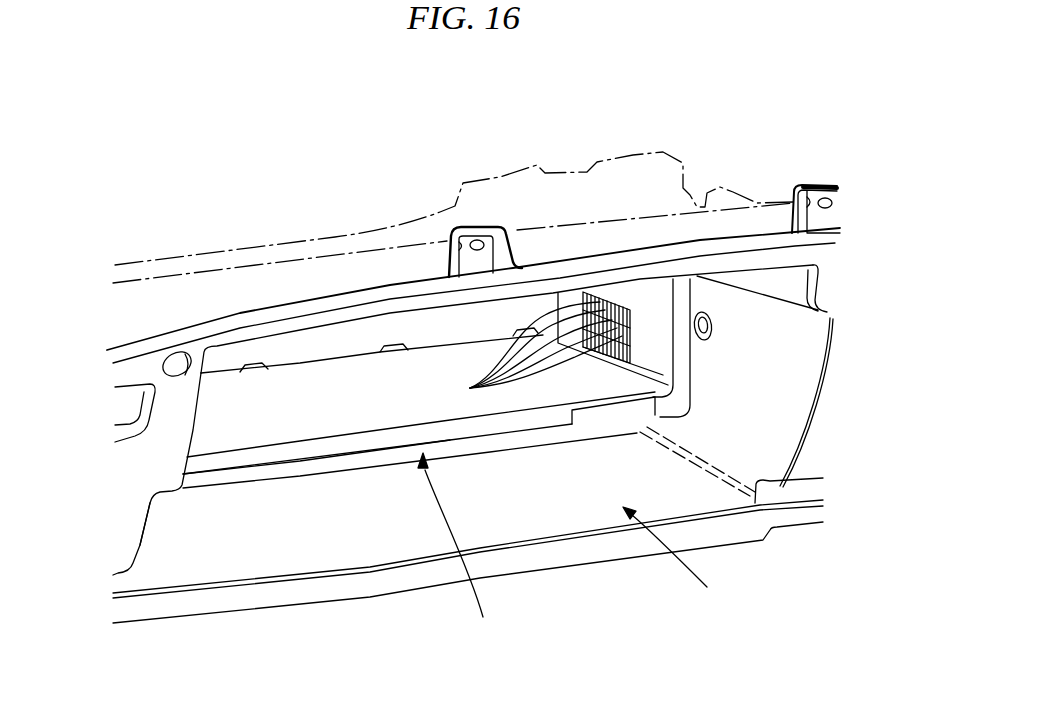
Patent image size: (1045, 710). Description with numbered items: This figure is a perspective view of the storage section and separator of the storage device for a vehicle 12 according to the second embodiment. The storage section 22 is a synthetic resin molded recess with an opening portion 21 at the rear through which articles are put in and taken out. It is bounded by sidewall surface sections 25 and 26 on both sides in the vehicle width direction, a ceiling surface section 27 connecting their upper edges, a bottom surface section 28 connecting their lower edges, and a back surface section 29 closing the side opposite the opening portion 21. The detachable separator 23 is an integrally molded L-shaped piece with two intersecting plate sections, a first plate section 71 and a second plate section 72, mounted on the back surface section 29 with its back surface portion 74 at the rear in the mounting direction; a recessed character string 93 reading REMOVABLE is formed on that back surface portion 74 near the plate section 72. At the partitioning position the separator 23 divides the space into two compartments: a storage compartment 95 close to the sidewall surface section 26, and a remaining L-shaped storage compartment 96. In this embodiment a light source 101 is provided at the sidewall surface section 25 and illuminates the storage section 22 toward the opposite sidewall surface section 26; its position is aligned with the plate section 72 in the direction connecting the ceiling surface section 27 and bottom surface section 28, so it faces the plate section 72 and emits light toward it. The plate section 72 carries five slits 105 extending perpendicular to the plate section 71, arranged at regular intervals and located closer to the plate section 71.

The storage device for a vehicle 12 is at (732, 168).
The ceiling surface section 27 is at (460, 308).
The storage compartment 95 is at (333, 347).
The first plate section 71 is at (347, 407).
The slits 105 is at (470, 388).
The light source 101 is at (699, 333).
The second plate section 72 is at (643, 342).
The sidewall surface section 25 is at (713, 415).
The sidewall surface section 26 is at (143, 518).
The separator 23 is at (458, 549).
The back surface portion 74 is at (508, 423).
The character string 93 is at (597, 413).
The storage section 22 is at (468, 560).
The opening portion 21 is at (697, 503).
The L-shaped storage compartment 96 is at (188, 558).
The back surface section 29 is at (252, 478).
The bottom surface section 28 is at (300, 540).